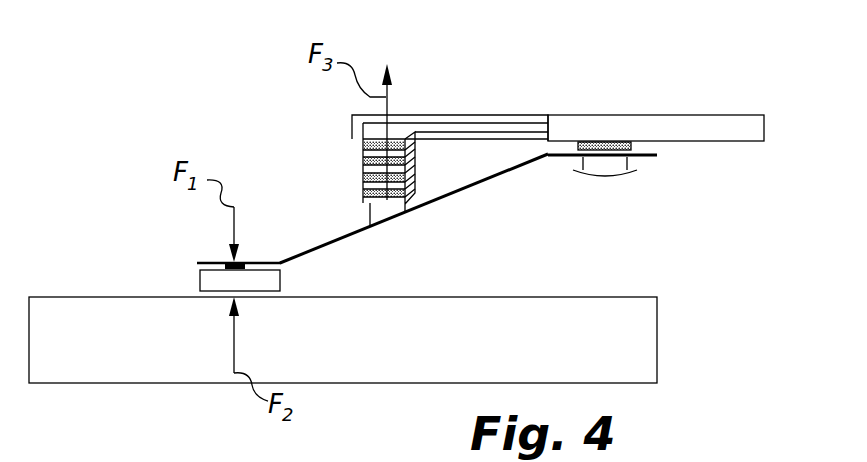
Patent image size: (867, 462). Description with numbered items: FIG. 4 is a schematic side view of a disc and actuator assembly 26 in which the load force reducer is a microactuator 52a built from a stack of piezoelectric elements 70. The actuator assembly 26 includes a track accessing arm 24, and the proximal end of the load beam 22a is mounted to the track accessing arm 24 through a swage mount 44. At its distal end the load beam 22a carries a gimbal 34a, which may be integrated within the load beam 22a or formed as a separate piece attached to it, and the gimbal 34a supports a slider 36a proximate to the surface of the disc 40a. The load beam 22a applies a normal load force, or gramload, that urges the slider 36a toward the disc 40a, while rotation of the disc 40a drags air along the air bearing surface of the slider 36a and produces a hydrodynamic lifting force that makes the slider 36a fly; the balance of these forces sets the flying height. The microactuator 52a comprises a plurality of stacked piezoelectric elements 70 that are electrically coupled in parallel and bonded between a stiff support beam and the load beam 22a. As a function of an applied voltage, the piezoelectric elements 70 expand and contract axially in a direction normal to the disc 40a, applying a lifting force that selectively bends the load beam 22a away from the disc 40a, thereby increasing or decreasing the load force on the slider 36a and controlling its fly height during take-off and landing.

The actuator assembly 26 is at (655, 80).
The track accessing arm 24 is at (717, 117).
The microactuator 52a is at (345, 132).
The stacked piezoelectric elements 70 is at (363, 178).
The load beam 22a is at (451, 192).
The swage mount 44 is at (664, 178).
The gimbal 34a is at (202, 259).
The slider 36a is at (188, 277).
The disc 40a is at (80, 383).